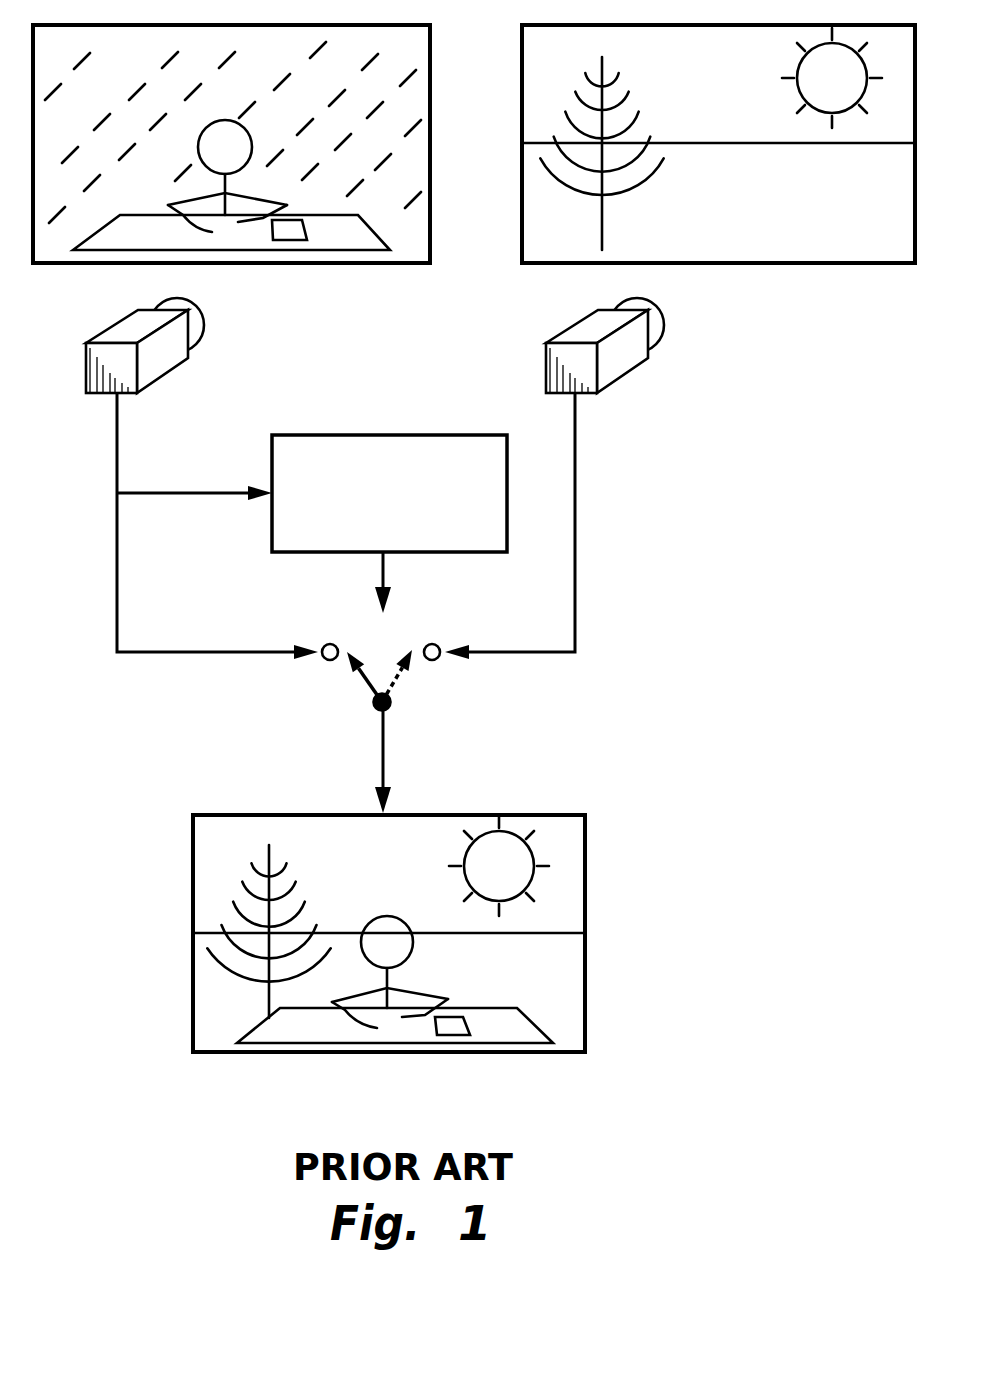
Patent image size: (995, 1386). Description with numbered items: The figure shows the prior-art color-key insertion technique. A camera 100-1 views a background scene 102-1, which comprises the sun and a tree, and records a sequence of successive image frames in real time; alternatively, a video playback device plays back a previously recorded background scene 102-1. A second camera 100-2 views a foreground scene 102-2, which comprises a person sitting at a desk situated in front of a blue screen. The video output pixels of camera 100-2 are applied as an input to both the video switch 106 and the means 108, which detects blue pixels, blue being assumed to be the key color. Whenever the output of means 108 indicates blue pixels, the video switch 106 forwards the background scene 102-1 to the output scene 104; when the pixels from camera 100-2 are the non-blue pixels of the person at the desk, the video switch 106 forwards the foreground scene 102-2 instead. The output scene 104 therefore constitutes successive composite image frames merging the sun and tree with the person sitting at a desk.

The camera 100-1 is at (632, 372).
The camera 100-2 is at (173, 372).
The background scene 102-1 is at (845, 263).
The foreground scene 102-2 is at (367, 263).
The output scene 104 is at (587, 958).
The video switch 106 is at (363, 680).
The means 108 is at (249, 537).